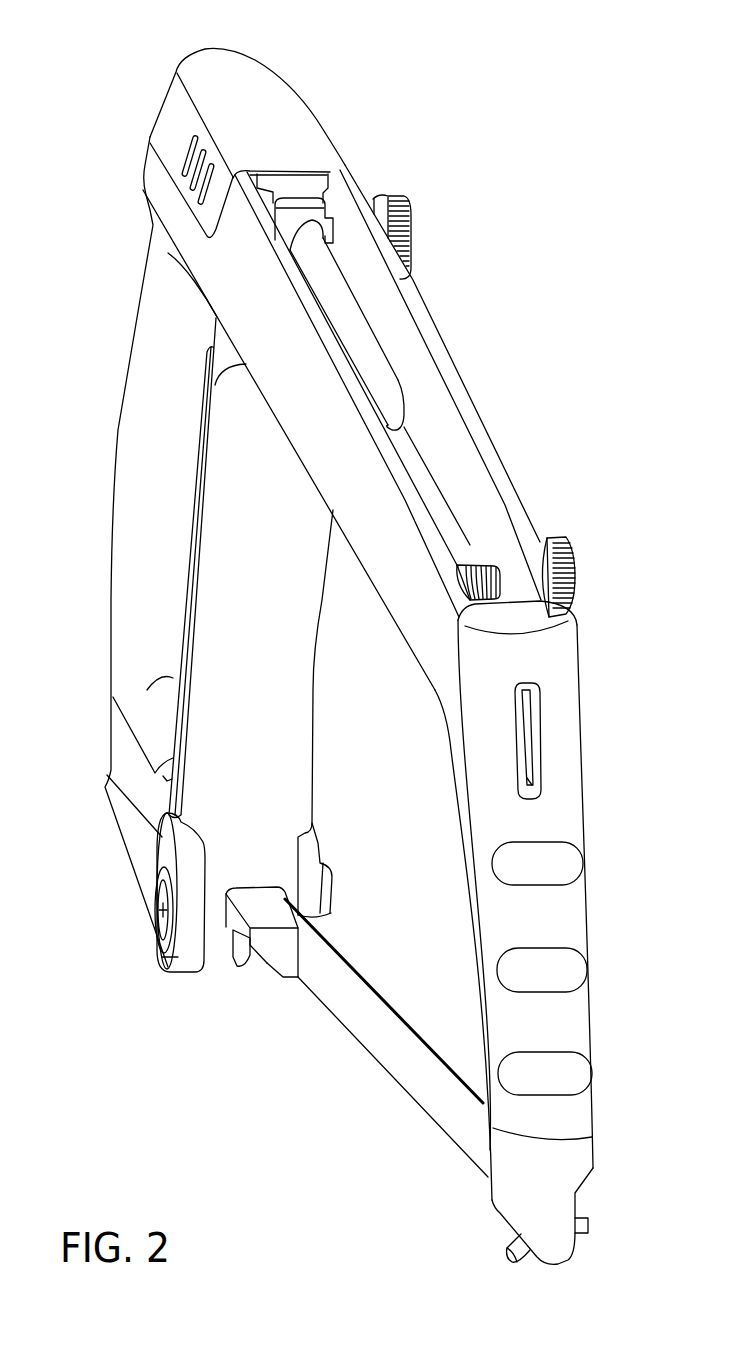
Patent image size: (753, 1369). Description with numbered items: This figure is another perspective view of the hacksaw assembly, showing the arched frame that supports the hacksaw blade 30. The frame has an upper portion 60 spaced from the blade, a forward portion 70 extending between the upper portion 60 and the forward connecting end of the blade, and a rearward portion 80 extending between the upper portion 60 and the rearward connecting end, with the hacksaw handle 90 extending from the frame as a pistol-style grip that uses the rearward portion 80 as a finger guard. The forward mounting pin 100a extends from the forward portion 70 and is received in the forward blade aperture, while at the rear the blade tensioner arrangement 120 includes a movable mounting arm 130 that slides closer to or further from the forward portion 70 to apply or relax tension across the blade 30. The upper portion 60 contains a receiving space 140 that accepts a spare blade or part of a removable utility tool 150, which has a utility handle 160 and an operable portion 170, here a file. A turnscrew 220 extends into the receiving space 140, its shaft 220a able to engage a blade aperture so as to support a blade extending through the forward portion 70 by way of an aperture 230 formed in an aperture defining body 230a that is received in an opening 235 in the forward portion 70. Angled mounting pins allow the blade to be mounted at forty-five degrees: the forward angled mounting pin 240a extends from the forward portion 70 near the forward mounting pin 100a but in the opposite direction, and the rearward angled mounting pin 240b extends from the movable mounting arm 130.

The hacksaw blade 30 is at (380, 1055).
The upper portion 60 is at (362, 540).
The forward portion 70 is at (553, 915).
The rearward portion 80 is at (297, 702).
The hacksaw handle 90 is at (132, 410).
The forward mounting pin 100a is at (589, 1227).
The blade tensioner arrangement 120 is at (133, 857).
The movable mounting arm 130 is at (253, 907).
The receiving space 140 is at (440, 420).
The removable utility tool 150 is at (317, 123).
The utility handle 160 is at (283, 95).
The operable portion 170 is at (367, 343).
The turnscrew 220 is at (580, 581).
The shaft 220a is at (470, 563).
The aperture 230 is at (530, 757).
The aperture defining body 230a is at (535, 715).
The opening 235 is at (545, 792).
The forward angled mounting pin 240a is at (524, 1258).
The rearward angled mounting pin 240b is at (238, 970).